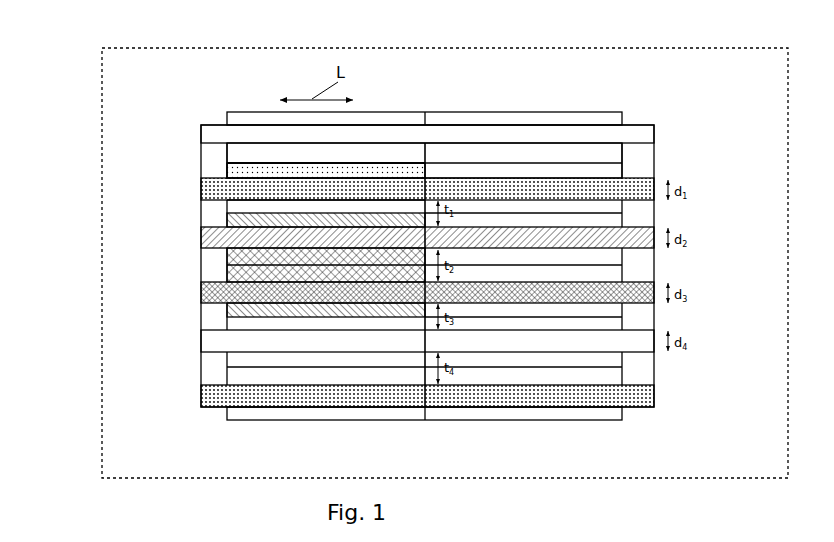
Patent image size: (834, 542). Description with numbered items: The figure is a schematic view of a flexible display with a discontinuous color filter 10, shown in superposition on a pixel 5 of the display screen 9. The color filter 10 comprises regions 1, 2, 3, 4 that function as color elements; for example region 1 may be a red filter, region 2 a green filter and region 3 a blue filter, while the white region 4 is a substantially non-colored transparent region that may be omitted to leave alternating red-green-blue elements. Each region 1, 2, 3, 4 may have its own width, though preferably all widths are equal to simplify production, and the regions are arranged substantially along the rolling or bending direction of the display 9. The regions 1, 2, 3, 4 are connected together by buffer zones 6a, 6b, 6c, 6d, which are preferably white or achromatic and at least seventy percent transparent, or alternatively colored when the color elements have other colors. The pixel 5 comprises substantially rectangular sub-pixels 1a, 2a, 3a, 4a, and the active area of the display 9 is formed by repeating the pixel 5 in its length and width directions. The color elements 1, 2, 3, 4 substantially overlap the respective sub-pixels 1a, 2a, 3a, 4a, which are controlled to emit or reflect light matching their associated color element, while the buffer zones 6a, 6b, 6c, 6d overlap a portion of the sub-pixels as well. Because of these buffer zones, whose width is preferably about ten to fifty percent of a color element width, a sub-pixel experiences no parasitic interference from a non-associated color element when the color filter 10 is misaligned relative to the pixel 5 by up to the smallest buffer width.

The region 1 is at (634, 133).
The region 2 is at (655, 180).
The region 3 is at (655, 228).
The white region 4 is at (655, 283).
The pixel 5 is at (227, 165).
The sub-pixel 1a is at (233, 320).
The sub-pixel 2a is at (237, 173).
The sub-pixel 3a is at (227, 212).
The sub-pixel 4a is at (230, 267).
The buffer zone 6a is at (442, 150).
The buffer zone 6b is at (470, 207).
The buffer zone 6c is at (480, 270).
The buffer zone 6d is at (552, 323).
The display screen 9 is at (576, 49).
The discontinuous color filter 10 is at (100, 28).